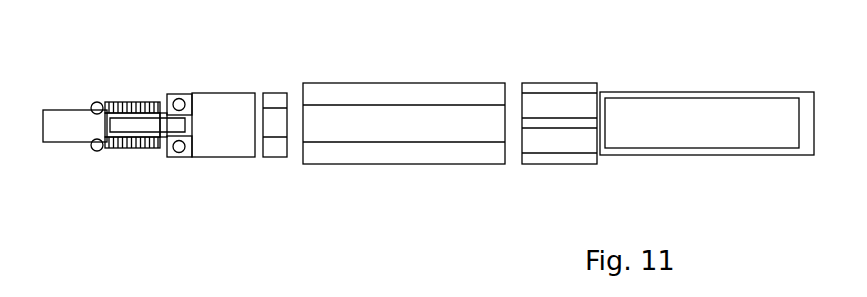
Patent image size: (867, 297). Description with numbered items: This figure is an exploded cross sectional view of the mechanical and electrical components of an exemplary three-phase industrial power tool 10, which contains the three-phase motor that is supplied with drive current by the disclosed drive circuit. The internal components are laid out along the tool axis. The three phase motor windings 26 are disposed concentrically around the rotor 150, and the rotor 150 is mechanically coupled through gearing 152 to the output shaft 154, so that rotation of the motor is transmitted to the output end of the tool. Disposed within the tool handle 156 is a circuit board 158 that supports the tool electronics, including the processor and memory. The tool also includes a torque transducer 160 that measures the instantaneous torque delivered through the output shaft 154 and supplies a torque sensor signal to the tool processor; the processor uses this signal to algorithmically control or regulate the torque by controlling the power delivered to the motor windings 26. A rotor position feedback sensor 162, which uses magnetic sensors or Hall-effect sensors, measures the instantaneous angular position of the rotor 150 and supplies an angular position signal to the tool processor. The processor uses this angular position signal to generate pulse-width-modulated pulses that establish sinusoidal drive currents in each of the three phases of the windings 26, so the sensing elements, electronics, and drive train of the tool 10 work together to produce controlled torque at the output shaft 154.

The power tool 10 is at (422, 188).
The three phase motor windings 26 is at (432, 90).
The rotor 150 is at (427, 130).
The gearing 152 is at (135, 150).
The output shaft 154 is at (72, 143).
The tool handle 156 is at (805, 102).
The circuit board 158 is at (732, 140).
The torque transducer 160 is at (275, 100).
The rotor position feedback sensor 162 is at (555, 102).